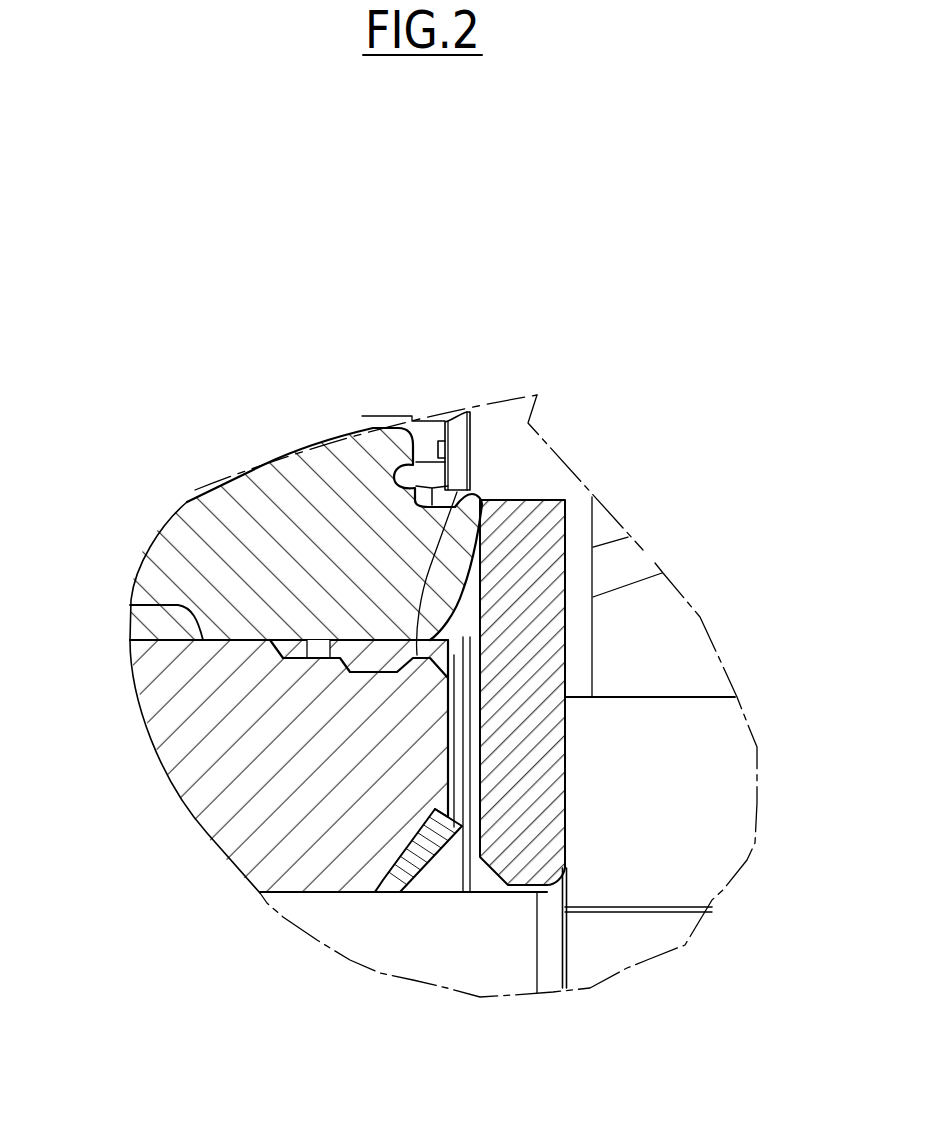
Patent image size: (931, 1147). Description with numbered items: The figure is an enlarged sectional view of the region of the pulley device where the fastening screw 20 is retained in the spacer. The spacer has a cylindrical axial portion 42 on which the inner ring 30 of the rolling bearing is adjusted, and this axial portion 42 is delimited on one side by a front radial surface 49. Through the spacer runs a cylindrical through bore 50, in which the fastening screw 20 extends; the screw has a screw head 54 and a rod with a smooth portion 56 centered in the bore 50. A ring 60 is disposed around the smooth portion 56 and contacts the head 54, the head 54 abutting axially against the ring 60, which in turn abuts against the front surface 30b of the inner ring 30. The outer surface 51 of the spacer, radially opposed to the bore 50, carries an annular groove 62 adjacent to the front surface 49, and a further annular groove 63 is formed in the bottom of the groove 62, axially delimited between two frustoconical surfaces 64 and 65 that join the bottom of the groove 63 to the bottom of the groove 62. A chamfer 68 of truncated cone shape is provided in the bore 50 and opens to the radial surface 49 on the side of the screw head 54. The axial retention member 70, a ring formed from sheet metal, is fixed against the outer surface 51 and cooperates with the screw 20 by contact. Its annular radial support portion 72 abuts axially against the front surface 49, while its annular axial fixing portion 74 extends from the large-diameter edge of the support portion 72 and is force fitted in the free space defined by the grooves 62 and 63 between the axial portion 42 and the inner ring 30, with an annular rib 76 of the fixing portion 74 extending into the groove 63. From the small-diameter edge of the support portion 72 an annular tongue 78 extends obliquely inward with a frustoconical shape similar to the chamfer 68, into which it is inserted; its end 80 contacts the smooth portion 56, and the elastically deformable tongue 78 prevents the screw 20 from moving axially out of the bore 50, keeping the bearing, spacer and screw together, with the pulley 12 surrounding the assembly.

The pulley 12 is at (712, 657).
The fastening screw 20 is at (503, 925).
The inner ring 30 is at (203, 535).
The front surface 30b is at (483, 562).
The axial portion 42 is at (267, 845).
The front radial surface 49 is at (462, 736).
The through bore 50 is at (287, 893).
The outer surface 51 is at (130, 605).
The screw head 54 is at (740, 850).
The smooth portion 56 is at (328, 912).
The ring 60 is at (523, 733).
The annular groove 62 is at (292, 640).
The annular groove 63 is at (407, 657).
The frustoconical surface 64 is at (387, 657).
The frustoconical surface 65 is at (422, 640).
The chamfer 68 is at (428, 880).
The axial retention member 70 is at (437, 755).
The radial support portion 72 is at (457, 783).
The axial fixing portion 74 is at (333, 650).
The annular rib 76 is at (416, 500).
The annular tongue 78 is at (432, 852).
The end 80 is at (393, 890).